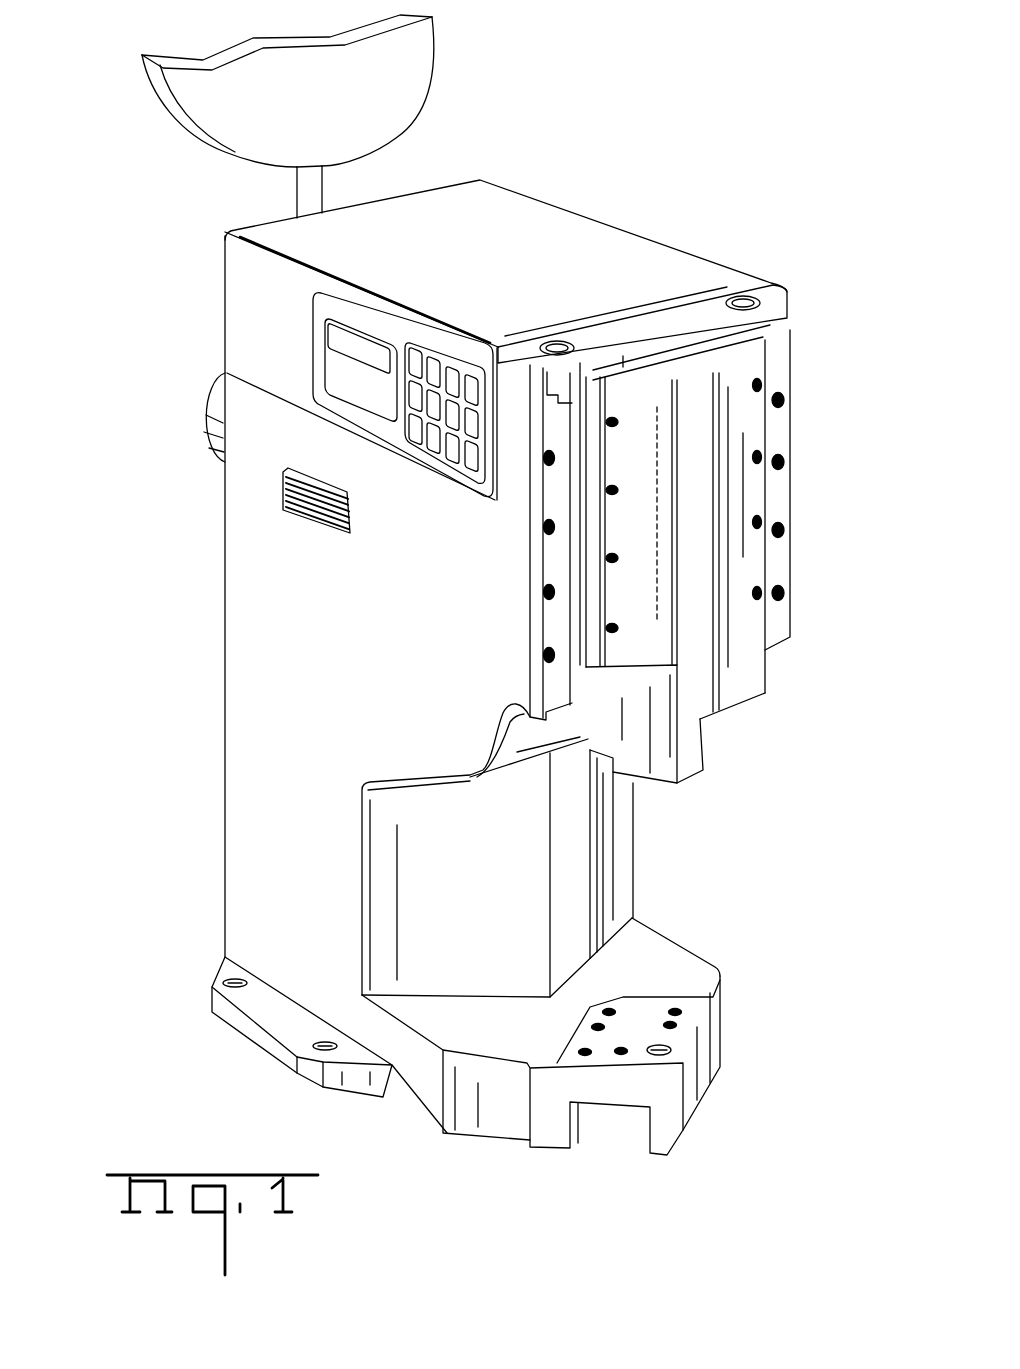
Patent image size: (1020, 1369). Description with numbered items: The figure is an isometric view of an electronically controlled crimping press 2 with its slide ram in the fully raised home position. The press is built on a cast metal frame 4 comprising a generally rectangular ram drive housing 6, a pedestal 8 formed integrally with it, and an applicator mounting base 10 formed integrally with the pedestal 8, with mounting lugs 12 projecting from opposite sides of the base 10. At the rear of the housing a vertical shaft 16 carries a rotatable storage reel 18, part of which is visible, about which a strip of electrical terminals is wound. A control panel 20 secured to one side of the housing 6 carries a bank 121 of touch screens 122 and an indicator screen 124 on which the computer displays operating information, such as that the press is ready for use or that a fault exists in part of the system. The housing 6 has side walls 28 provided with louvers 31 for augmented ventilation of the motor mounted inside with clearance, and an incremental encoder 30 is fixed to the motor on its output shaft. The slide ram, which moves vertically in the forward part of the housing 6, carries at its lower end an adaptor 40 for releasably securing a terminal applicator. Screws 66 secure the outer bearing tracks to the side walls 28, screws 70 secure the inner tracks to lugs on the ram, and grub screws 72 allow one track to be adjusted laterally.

The electronically controlled crimping press 2 is at (790, 228).
The cast metal frame 4 is at (660, 210).
The ram drive housing 6 is at (412, 555).
The pedestal 8 is at (472, 925).
The applicator mounting base 10 is at (672, 990).
The mounting lugs 12 is at (290, 1020).
The vertical shaft 16 is at (303, 188).
The rotatable storage reel 18 is at (383, 78).
The control panel 20 is at (394, 364).
The side walls 28 is at (318, 688).
The incremental encoder 30 is at (203, 410).
The louvers 31 is at (320, 525).
The adaptor 40 is at (688, 767).
The screws 66 is at (550, 591).
The screws 70 is at (612, 490).
The grub screws 72 is at (702, 496).
The bank of touch screens 121 is at (440, 348).
The touch screens 122 is at (450, 442).
The indicator screen 124 is at (345, 338).